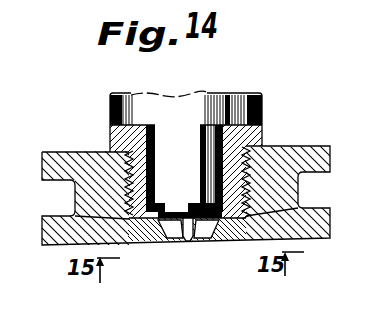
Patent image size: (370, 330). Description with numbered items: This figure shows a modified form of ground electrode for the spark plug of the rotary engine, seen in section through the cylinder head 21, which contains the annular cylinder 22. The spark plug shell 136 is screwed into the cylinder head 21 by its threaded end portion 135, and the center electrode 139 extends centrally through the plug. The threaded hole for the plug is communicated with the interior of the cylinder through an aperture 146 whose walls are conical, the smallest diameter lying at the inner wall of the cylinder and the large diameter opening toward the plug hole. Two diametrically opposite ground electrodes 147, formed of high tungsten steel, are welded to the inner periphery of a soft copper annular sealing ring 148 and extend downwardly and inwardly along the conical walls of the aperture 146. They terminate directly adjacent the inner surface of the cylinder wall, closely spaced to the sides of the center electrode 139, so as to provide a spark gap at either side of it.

The cylinder head 21 is at (83, 150).
The annular cylinder 22 is at (68, 213).
The threaded end portion 135 is at (242, 154).
The spark plug shell 136 is at (260, 110).
The center electrode 139 is at (193, 204).
The aperture 146 is at (188, 243).
The ground electrodes 147 is at (163, 243).
The sealing ring 148 is at (299, 189).